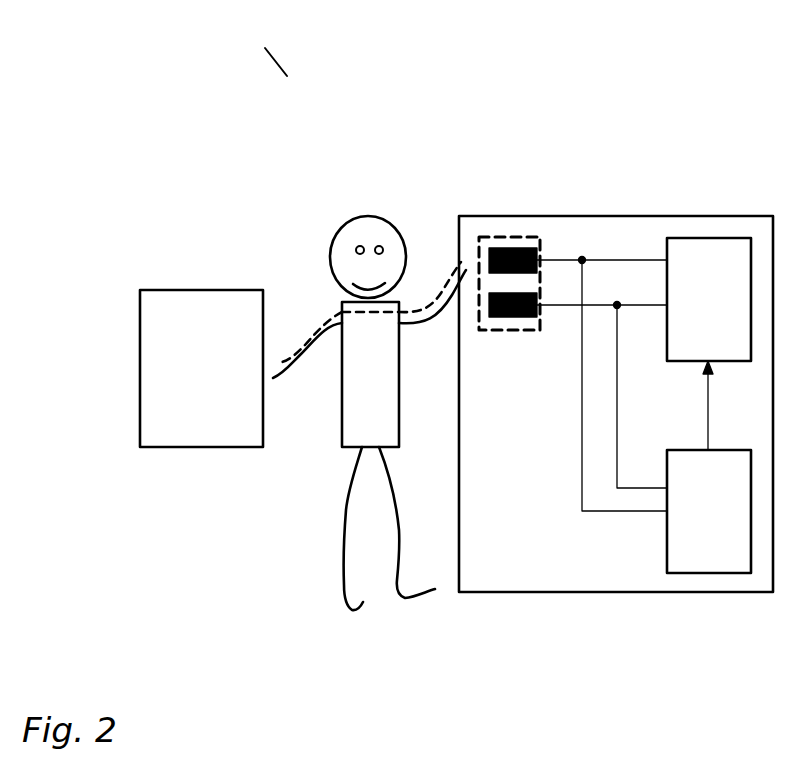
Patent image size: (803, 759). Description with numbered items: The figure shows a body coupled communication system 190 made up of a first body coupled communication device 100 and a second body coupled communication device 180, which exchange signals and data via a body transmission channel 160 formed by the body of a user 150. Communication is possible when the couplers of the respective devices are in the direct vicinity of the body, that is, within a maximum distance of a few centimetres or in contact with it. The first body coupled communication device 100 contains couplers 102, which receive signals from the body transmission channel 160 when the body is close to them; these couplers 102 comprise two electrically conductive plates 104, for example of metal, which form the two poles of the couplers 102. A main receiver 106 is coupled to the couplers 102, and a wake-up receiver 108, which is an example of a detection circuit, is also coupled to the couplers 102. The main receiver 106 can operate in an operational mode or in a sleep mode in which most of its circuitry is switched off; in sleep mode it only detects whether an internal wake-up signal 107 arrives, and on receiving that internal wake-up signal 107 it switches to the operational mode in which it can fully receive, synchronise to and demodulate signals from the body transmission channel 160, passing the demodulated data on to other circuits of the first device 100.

The body coupled communication system 190 is at (287, 76).
The first body coupled communication device 100 is at (616, 404).
The couplers 102 is at (492, 237).
The plates 104 is at (537, 305).
The main receiver 106 is at (709, 299).
The internal wake-up signal 107 is at (708, 405).
The wake-up receiver 108 is at (709, 511).
The user 150 is at (369, 413).
The body transmission channel 160 is at (440, 280).
The second body coupled communication device 180 is at (201, 368).